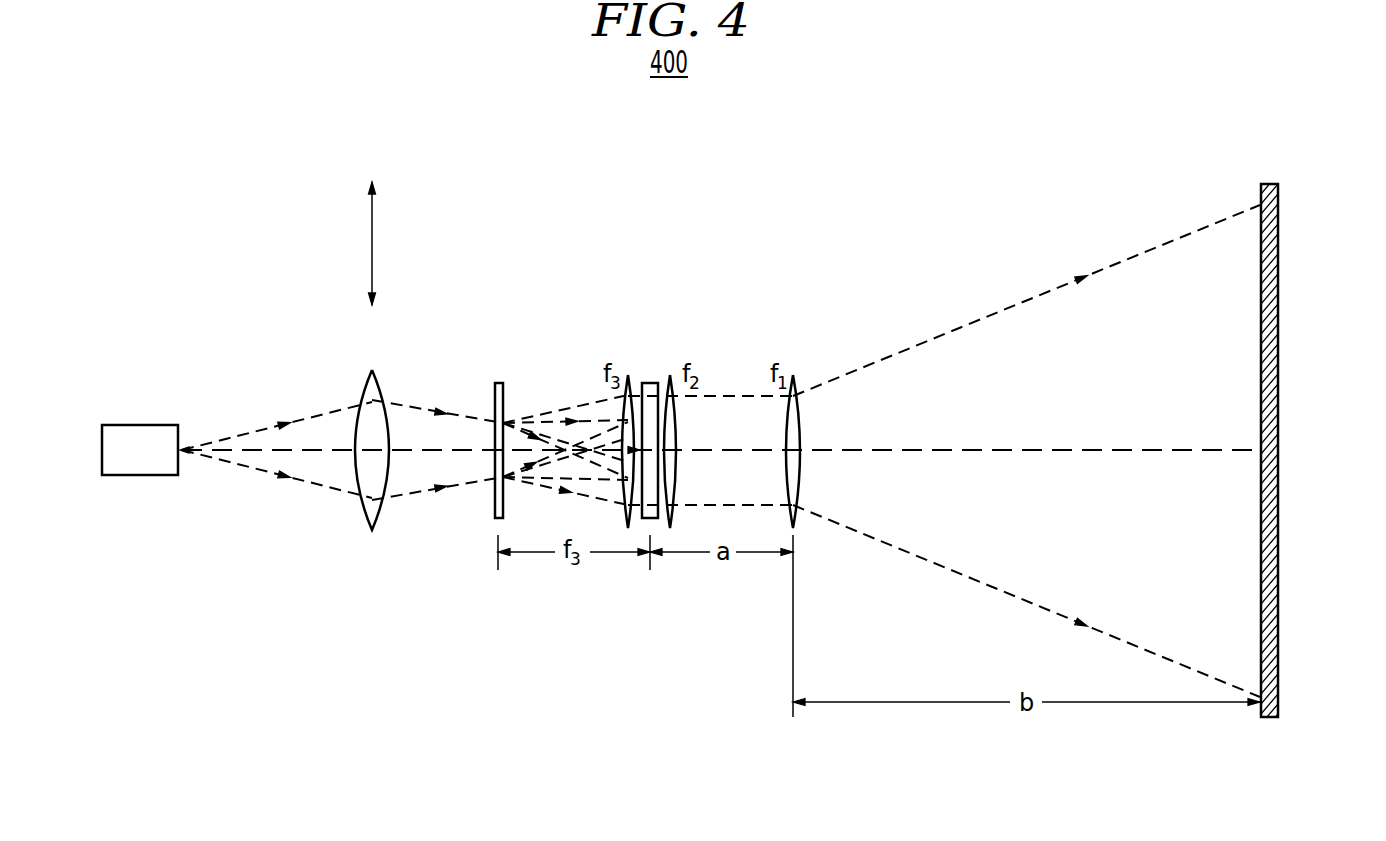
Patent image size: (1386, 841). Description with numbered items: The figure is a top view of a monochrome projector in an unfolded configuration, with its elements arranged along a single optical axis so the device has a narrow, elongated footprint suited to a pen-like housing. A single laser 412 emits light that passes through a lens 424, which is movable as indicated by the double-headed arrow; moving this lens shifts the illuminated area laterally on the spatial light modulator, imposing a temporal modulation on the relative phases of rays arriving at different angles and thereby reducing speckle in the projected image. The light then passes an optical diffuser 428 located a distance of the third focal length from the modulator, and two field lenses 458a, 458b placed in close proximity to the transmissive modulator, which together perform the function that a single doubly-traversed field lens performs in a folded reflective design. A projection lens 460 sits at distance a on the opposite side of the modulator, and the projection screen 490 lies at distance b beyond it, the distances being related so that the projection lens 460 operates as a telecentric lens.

The laser 412 is at (135, 475).
The lens 424 is at (362, 512).
The optical diffuser 428 is at (497, 383).
The field lens 458a is at (630, 375).
The field lens 458b is at (670, 373).
The projection lens 460 is at (793, 373).
The projection screen 490 is at (1278, 297).